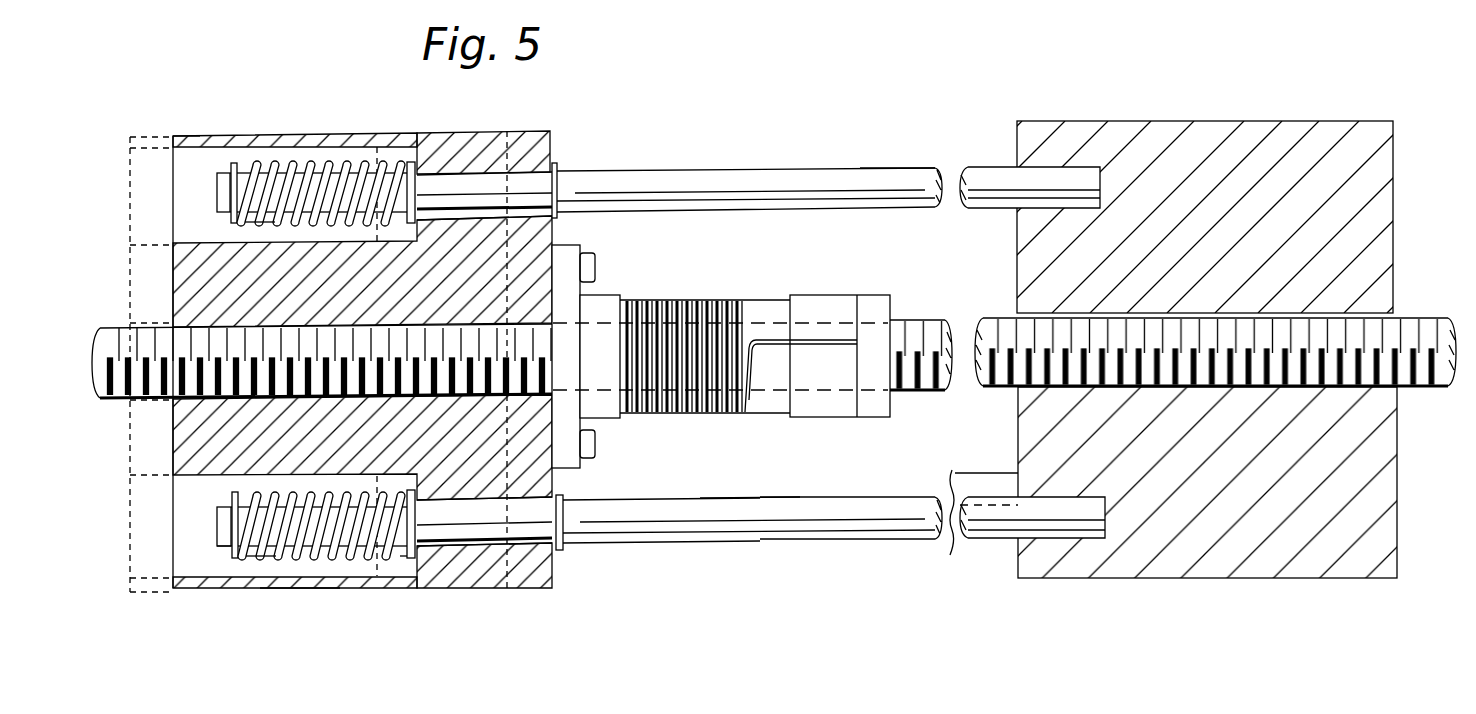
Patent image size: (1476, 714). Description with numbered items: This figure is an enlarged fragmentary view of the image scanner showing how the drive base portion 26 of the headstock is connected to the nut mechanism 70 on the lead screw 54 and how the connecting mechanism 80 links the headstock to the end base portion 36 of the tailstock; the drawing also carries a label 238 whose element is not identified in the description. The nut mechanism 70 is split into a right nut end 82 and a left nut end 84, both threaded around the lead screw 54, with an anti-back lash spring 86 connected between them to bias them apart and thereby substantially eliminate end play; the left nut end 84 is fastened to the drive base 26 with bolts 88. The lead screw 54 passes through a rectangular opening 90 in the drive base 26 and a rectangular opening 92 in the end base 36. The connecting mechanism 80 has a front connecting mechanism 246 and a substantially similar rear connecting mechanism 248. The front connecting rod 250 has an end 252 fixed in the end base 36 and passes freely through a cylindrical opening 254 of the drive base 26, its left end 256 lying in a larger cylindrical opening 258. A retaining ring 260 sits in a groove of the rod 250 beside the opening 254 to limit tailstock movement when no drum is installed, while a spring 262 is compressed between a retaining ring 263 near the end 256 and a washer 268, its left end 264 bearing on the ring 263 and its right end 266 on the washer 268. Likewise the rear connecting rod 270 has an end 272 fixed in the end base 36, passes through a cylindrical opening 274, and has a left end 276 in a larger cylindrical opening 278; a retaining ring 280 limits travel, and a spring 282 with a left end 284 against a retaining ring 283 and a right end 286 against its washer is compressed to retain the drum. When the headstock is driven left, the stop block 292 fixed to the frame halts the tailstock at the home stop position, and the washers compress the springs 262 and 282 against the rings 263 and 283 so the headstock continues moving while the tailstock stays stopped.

The drive base portion 26 is at (297, 589).
The end base portion 36 is at (1290, 580).
The lead screw 54 is at (936, 320).
The nut mechanism 70 is at (622, 428).
The connecting mechanism 80 is at (749, 540).
The right nut end 82 is at (821, 293).
The left nut end 84 is at (606, 294).
The anti-back lash spring 86 is at (692, 298).
The bolts 88 is at (594, 254).
The rectangular opening 90 is at (171, 402).
The rectangular opening 92 is at (1398, 388).
The housing 238 is at (418, 132).
The front connecting mechanism 246 is at (666, 540).
The rear connecting mechanism 248 is at (703, 168).
The front connecting rod 250 is at (871, 540).
The end 252 is at (1095, 540).
The cylindrical opening 254 is at (541, 589).
The left end 256 is at (229, 543).
The cylindrical opening 258 is at (406, 559).
The retaining ring 260 is at (561, 548).
The spring 262 is at (258, 552).
The retaining ring 263 is at (230, 559).
The left end 264 is at (226, 509).
The right end 266 is at (376, 552).
The washer 268 is at (420, 553).
The rear connecting rod 270 is at (905, 167).
The end 272 is at (1103, 168).
The cylindrical opening 274 is at (550, 142).
The left end 276 is at (177, 137).
The cylindrical opening 278 is at (324, 155).
The retaining ring 280 is at (558, 164).
The spring 282 is at (278, 166).
The retaining ring 283 is at (216, 186).
The left end 284 is at (233, 163).
The right end 286 is at (406, 186).
The stop block 292 is at (950, 542).